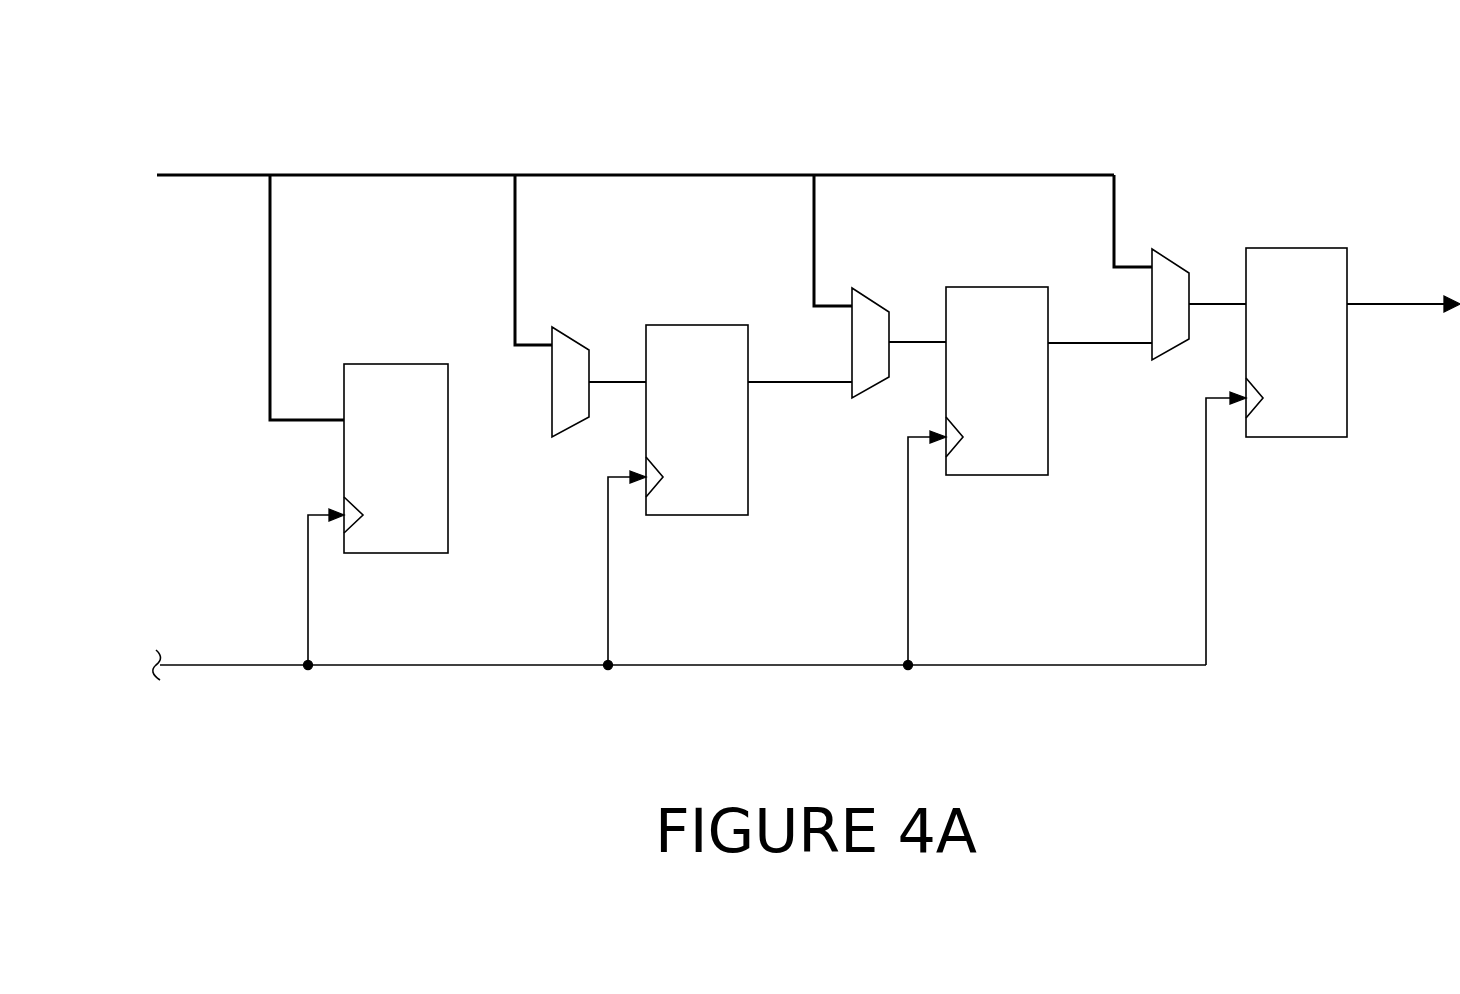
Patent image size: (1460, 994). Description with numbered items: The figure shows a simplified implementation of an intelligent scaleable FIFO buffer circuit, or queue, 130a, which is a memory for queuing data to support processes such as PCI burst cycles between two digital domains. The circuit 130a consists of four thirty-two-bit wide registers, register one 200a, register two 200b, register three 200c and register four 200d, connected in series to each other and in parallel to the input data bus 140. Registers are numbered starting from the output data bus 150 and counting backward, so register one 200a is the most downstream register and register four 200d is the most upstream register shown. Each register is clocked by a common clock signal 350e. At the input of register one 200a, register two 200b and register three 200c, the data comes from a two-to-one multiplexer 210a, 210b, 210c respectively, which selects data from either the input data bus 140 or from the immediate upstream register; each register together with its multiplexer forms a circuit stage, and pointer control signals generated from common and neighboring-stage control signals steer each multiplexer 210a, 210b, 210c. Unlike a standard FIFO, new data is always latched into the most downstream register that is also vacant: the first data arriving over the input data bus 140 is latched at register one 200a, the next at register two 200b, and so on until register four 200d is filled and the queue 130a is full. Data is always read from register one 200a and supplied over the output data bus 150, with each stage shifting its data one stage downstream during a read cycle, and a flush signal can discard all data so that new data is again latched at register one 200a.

The FIFO buffer circuit 130a is at (183, 95).
The input data bus 140 is at (193, 177).
The output data bus 150 is at (1378, 307).
The register1 200a is at (1347, 398).
The register2 200b is at (1048, 437).
The register3 200c is at (748, 477).
The register4 200d is at (448, 515).
The multiplexer 210a is at (1190, 274).
The multiplexer 210b is at (890, 313).
The multiplexer 210c is at (590, 352).
The common clock signal 350e is at (337, 667).